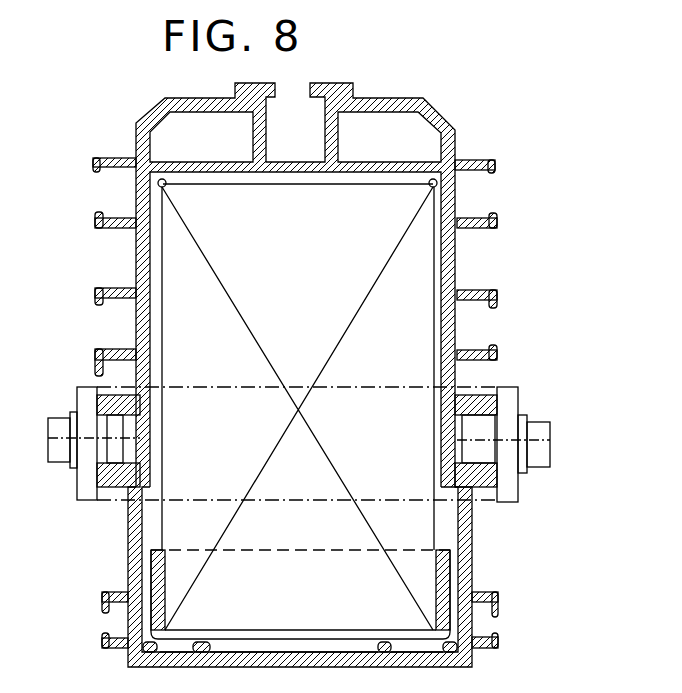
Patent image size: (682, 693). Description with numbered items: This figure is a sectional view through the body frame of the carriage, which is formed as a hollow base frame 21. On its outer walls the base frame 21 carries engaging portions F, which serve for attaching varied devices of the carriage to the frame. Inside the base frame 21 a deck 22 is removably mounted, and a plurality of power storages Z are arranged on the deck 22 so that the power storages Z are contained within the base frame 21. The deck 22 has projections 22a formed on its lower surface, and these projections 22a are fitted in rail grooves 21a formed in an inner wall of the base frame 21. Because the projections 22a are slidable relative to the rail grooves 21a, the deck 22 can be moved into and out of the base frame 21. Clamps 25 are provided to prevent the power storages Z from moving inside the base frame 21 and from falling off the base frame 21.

The base frame 21 is at (457, 140).
The rail groove 21a is at (207, 651).
The deck 22 is at (450, 585).
The projection 22a is at (200, 655).
The clamp 25 is at (518, 400).
The power storage Z is at (412, 268).
The engaging portion F is at (299, 141).